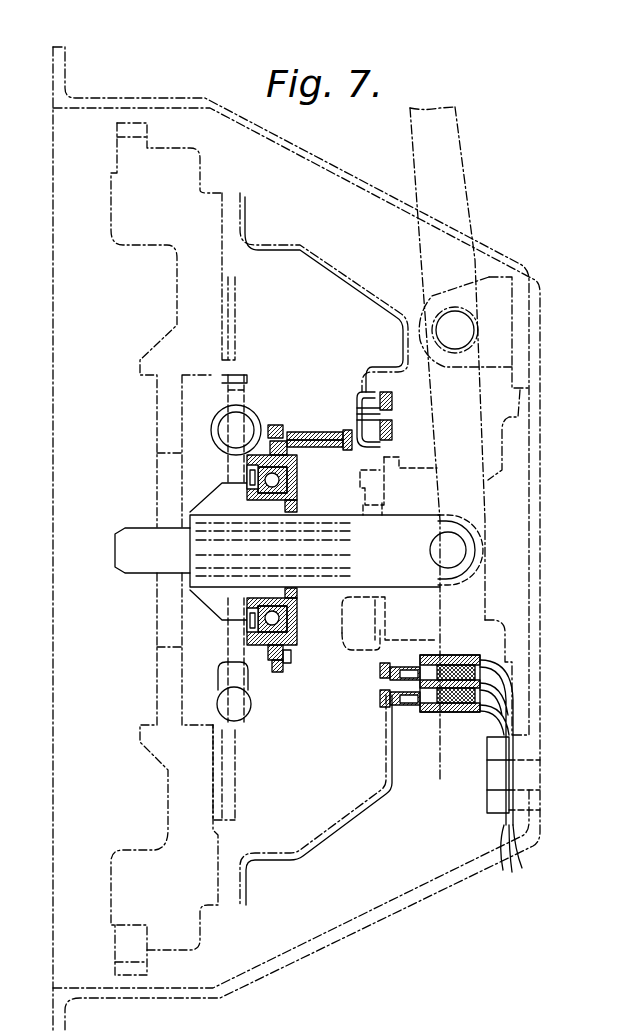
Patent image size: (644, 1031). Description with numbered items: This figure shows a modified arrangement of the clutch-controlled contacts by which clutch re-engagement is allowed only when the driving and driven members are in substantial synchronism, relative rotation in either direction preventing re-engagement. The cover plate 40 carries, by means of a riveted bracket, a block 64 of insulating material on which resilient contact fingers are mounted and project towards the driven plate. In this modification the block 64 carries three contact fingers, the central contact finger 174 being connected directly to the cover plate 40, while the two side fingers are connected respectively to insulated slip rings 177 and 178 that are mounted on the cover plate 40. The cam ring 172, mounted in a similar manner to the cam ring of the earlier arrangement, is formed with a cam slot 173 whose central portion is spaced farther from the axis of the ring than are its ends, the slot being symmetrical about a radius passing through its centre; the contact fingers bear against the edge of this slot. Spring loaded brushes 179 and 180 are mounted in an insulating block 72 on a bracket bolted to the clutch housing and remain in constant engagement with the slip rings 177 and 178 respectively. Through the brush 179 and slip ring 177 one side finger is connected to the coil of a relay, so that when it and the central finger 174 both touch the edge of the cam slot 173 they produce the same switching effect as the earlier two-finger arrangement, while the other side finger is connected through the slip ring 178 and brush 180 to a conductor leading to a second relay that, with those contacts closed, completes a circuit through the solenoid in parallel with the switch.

The cover plate 40 is at (350, 274).
The block of insulating material 64 is at (315, 450).
The insulating block 72 is at (457, 712).
The cam ring 172 is at (272, 664).
The cam slot 173 is at (263, 422).
The central contact finger 174 is at (287, 432).
The slip ring 177 is at (364, 392).
The slip ring 178 is at (389, 428).
The spring loaded brush 179 is at (395, 692).
The spring loaded brush 180 is at (380, 668).